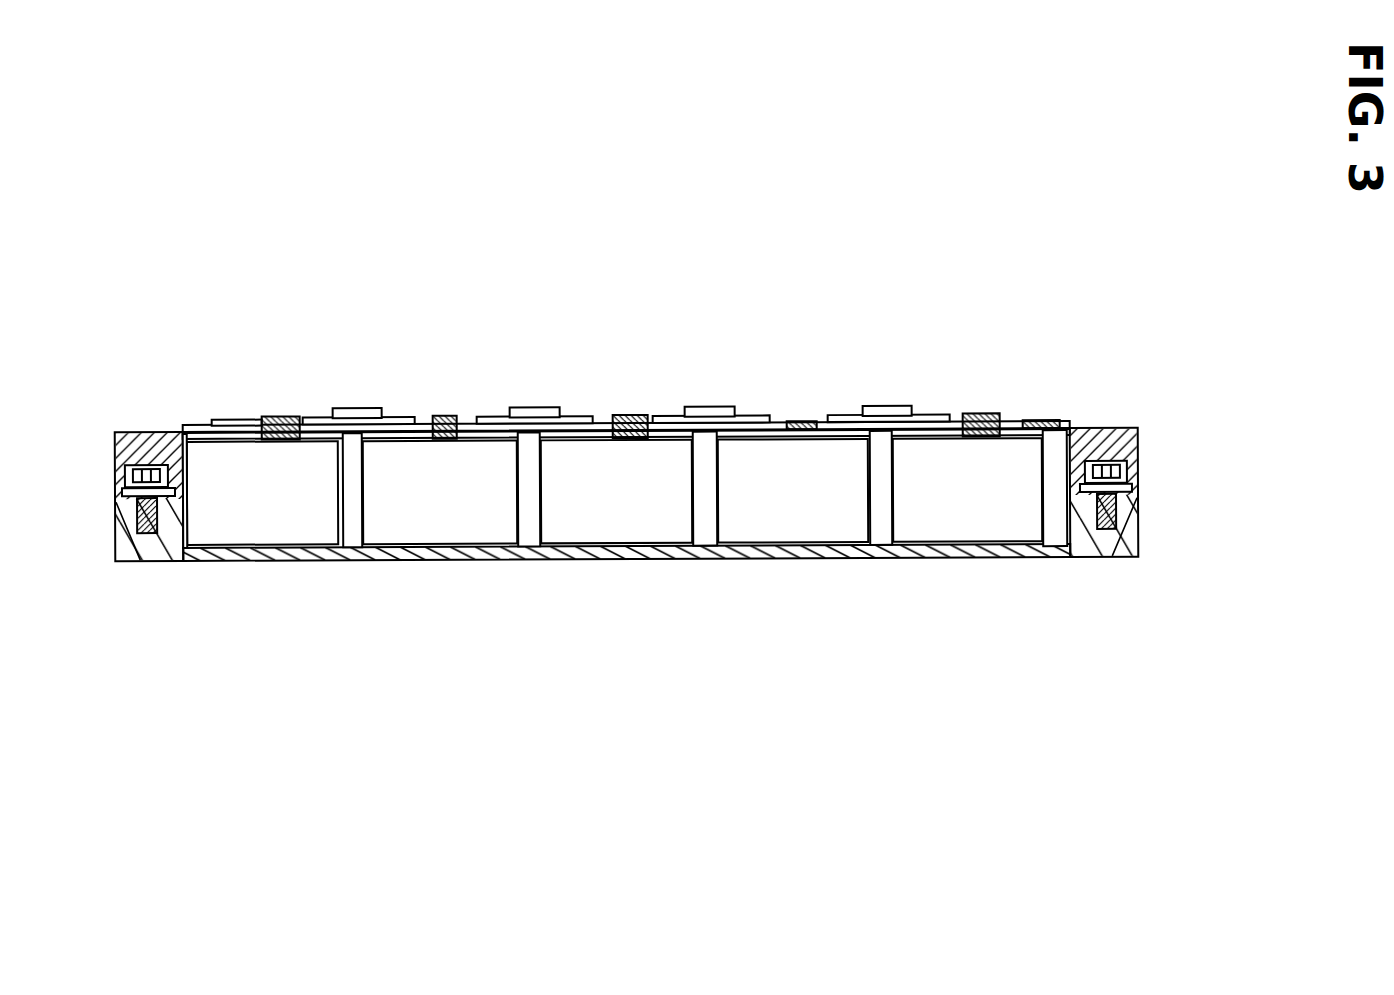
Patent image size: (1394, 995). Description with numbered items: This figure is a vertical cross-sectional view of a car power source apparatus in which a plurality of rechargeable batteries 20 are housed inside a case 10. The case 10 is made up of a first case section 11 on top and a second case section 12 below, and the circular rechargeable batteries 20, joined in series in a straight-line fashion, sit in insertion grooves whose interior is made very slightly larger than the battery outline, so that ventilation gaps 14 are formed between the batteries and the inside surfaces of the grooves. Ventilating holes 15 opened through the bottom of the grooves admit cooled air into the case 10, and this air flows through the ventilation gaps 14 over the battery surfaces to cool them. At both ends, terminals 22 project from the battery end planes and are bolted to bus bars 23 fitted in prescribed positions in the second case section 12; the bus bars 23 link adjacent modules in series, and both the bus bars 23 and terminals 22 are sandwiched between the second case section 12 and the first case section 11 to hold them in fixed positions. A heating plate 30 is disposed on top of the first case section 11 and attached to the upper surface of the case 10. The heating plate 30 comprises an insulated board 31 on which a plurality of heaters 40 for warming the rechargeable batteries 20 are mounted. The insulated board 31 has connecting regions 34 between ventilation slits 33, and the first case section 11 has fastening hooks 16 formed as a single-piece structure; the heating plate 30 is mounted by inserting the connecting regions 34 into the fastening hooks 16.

The case 10 is at (1244, 551).
The first case section 11 is at (1138, 455).
The second case section 12 is at (1132, 530).
The ventilation gaps 14 is at (240, 547).
The ventilating holes 15 is at (400, 443).
The fastening hooks 16 is at (277, 417).
The rechargeable batteries 20 is at (290, 516).
The terminals 22 is at (122, 479).
The bus bars 23 is at (115, 518).
The heating plate 30 is at (830, 364).
The insulated board 31 is at (1052, 426).
The ventilation slits 33 is at (427, 425).
The connecting regions 34 is at (262, 425).
The heaters 40 is at (352, 415).